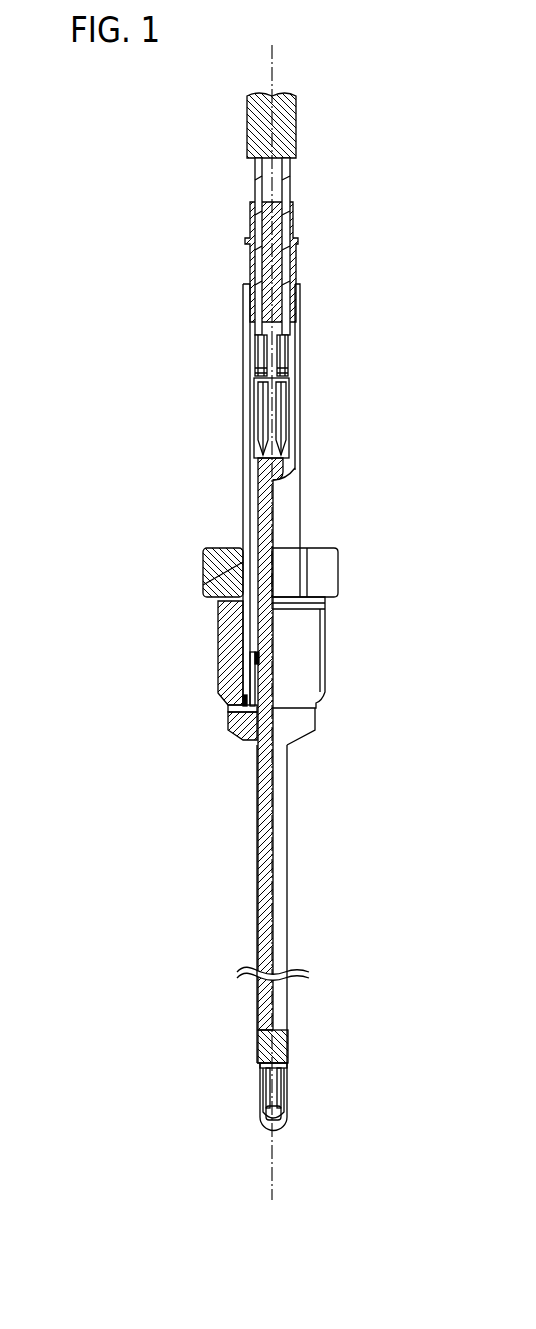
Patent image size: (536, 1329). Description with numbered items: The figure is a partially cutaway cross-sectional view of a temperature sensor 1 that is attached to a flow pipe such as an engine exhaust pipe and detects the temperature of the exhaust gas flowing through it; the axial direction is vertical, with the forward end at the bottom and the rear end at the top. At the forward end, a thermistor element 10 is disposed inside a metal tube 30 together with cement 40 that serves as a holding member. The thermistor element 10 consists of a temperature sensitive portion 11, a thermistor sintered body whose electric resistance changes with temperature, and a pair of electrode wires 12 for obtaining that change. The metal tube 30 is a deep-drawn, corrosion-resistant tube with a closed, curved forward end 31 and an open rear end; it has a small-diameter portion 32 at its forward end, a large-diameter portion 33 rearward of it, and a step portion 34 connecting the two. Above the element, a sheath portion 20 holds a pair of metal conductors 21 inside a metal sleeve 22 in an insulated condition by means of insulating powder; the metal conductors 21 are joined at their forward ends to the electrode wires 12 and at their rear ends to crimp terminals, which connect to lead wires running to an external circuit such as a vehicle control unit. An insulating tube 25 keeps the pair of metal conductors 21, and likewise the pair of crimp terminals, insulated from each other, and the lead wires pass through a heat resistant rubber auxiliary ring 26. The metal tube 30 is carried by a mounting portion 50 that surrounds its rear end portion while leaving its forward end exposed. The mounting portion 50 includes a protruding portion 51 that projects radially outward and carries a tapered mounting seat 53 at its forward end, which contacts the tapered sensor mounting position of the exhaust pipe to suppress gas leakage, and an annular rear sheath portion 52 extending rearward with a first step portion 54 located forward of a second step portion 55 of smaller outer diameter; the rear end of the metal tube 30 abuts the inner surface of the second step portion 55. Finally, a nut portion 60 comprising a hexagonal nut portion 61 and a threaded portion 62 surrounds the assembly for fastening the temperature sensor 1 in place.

The temperature sensor 1 is at (79, 224).
The thermistor element 10 is at (190, 1120).
The temperature sensitive portion 11 is at (262, 1122).
The electrode wires 12 is at (266, 1108).
The sheath portion 20 is at (257, 920).
The metal conductors 21 is at (259, 1069).
The sleeve 22 is at (258, 1031).
The insulating tube 25 is at (297, 407).
The auxiliary ring 26 is at (294, 220).
The metal tube 30 is at (258, 1006).
The forward end 31 is at (282, 1128).
The small-diameter portion 32 is at (287, 1104).
The large-diameter portion 33 is at (288, 1010).
The step portion 34 is at (288, 1069).
The cement 40 is at (263, 1094).
The mounting portion 50 is at (122, 642).
The protruding portion 51 is at (240, 726).
The rear sheath portion 52 is at (163, 630).
The mounting seat 53 is at (245, 733).
The first step portion 54 is at (249, 688).
The second step portion 55 is at (254, 657).
The nut portion 60 is at (420, 548).
The hexagonal nut portion 61 is at (340, 565).
The threaded portion 62 is at (328, 618).